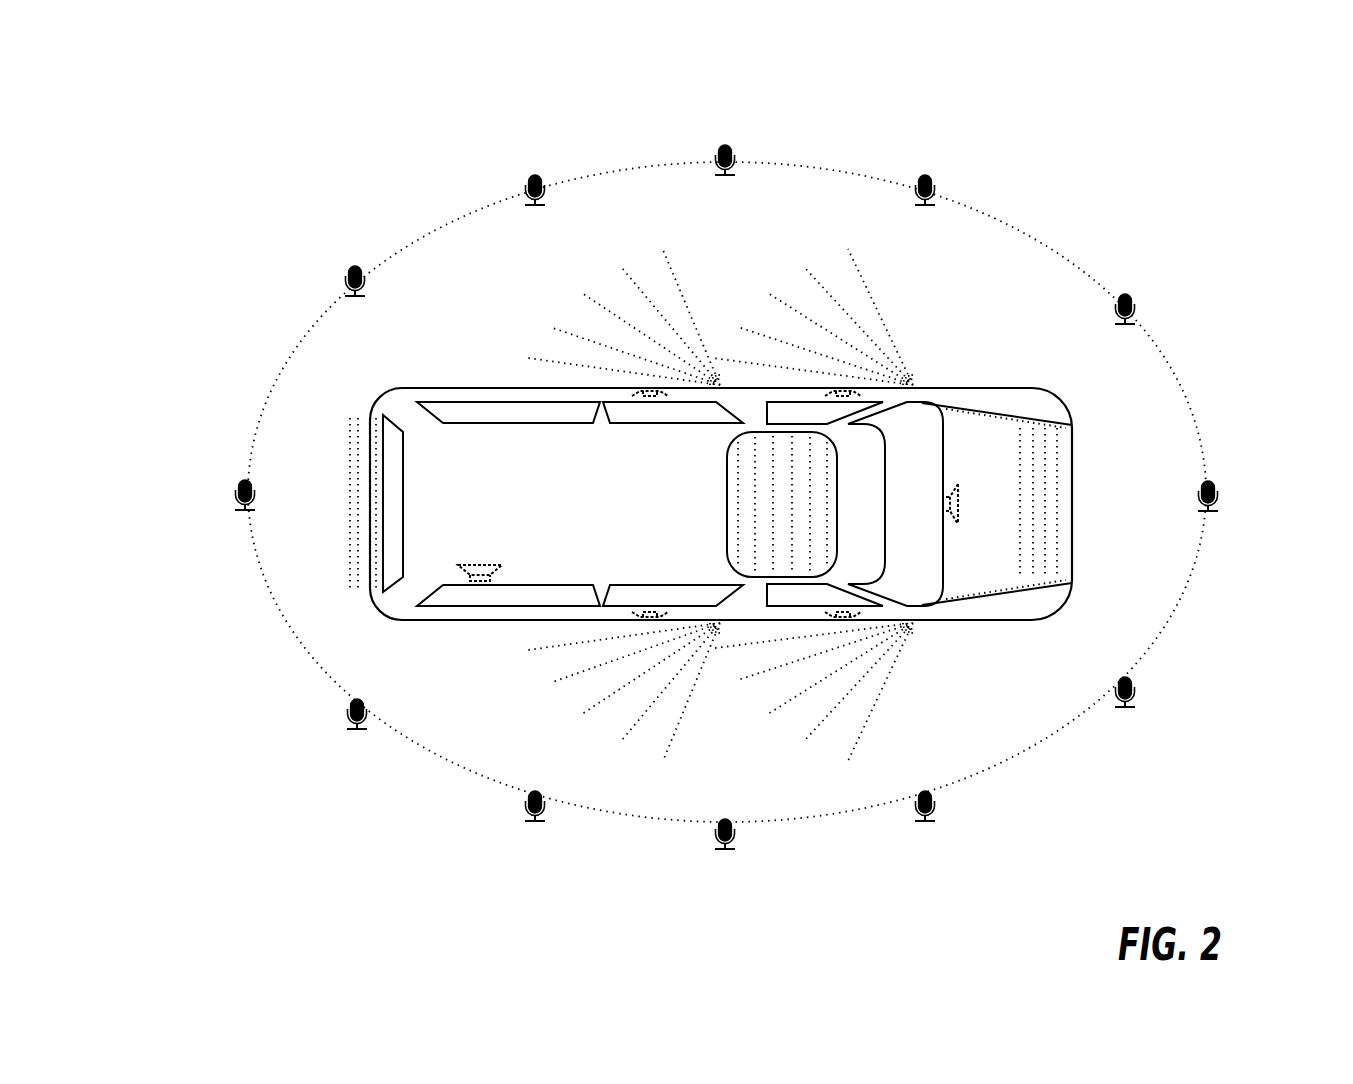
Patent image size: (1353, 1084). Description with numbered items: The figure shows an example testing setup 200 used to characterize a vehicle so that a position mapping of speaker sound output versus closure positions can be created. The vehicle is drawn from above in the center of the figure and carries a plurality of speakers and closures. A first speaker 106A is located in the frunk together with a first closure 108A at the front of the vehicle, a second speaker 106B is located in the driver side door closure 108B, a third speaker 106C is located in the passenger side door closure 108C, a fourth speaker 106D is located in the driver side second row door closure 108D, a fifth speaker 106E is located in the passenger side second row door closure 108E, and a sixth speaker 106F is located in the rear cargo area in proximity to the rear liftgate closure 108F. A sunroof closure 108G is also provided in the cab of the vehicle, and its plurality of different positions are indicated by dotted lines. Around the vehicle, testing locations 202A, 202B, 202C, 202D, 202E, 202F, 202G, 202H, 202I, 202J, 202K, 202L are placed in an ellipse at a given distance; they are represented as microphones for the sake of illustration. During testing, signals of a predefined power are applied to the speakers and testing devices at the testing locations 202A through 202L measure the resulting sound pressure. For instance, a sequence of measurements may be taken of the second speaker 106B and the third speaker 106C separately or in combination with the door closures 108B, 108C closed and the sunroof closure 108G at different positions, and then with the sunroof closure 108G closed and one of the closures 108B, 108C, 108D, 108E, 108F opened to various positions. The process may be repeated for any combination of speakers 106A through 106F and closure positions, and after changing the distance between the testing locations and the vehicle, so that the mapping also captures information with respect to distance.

The testing setup 200 is at (250, 70).
The first speaker 106A is at (962, 502).
The second speaker 106B is at (855, 395).
The third speaker 106C is at (847, 613).
The fourth speaker 106D is at (647, 393).
The fifth speaker 106E is at (655, 612).
The sixth speaker 106F is at (483, 565).
The first closure 108A is at (1072, 451).
The driver side door closure 108B is at (907, 387).
The passenger side door closure 108C is at (908, 622).
The driver side second row door closure 108D is at (722, 390).
The passenger side second row door closure 108E is at (722, 618).
The rear liftgate closure 108F is at (373, 410).
The sunroof closure 108G is at (838, 458).
The testing location 202A is at (725, 143).
The testing location 202B is at (925, 173).
The testing location 202C is at (1125, 292).
The testing location 202D is at (1213, 483).
The testing location 202E is at (1125, 708).
The testing location 202F is at (925, 822).
The testing location 202G is at (725, 850).
The testing location 202H is at (535, 822).
The testing location 202I is at (355, 730).
The testing location 202J is at (243, 485).
The testing location 202K is at (355, 264).
The testing location 202L is at (535, 173).